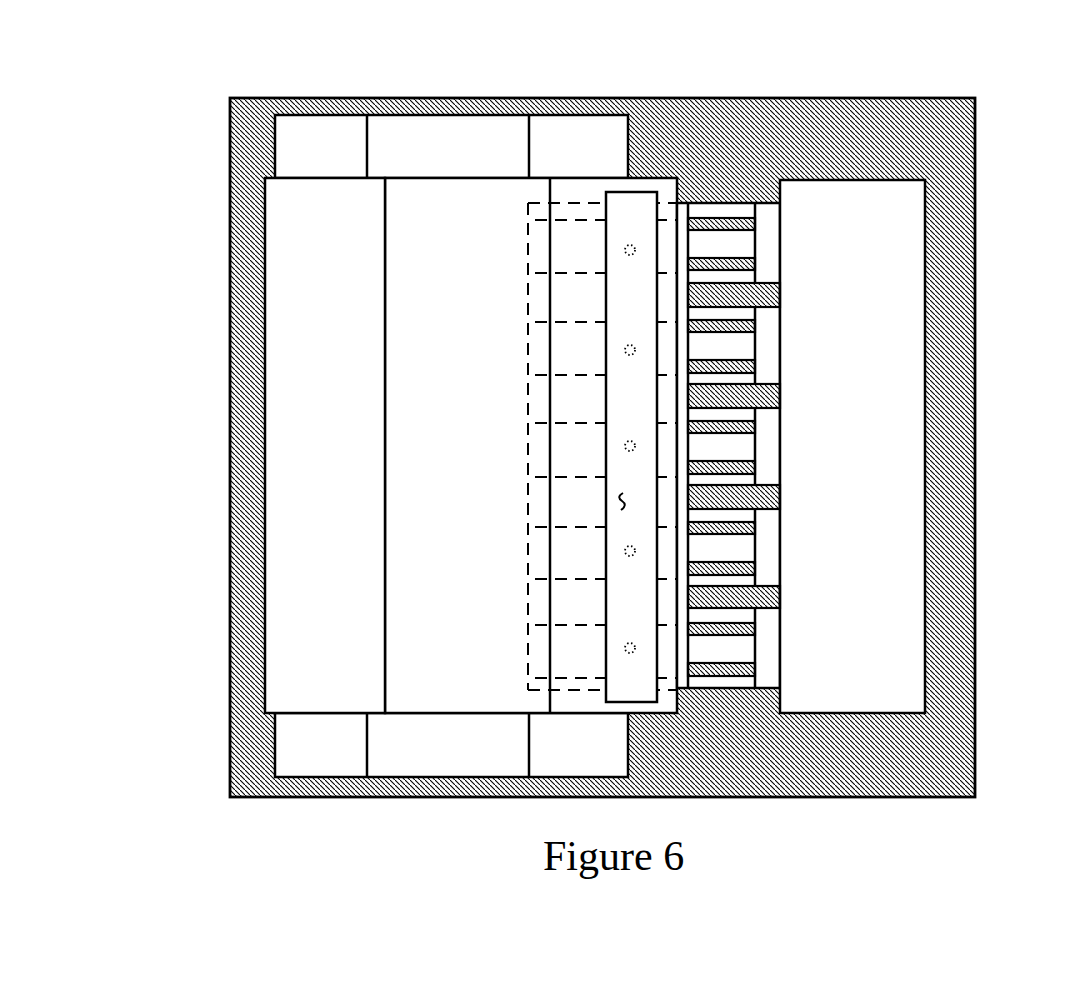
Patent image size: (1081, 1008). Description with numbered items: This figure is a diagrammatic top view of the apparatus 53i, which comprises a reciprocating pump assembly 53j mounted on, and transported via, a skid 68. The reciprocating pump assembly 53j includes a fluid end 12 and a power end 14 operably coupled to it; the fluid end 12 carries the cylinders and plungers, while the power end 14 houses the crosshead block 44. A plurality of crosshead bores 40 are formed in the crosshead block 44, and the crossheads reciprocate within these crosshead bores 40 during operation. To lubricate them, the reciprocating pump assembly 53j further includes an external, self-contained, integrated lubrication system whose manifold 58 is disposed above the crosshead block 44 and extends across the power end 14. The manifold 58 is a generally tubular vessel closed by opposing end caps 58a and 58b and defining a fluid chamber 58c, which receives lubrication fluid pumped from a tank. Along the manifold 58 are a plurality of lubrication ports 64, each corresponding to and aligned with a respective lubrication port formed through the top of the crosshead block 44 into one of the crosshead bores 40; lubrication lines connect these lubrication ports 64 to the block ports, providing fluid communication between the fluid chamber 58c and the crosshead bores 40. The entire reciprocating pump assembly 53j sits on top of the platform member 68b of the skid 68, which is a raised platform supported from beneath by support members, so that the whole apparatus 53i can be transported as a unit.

The fluid end 12 is at (806, 446).
The power end 14 is at (325, 445).
The crosshead bores 40 is at (540, 222).
The crosshead block 44 is at (528, 692).
The apparatus 53i is at (148, 125).
The reciprocating pump assembly 53j is at (492, 92).
The manifold 58 is at (606, 293).
The end cap 58a is at (617, 702).
The end cap 58b is at (630, 192).
The fluid chamber 58c is at (618, 503).
The lubrication ports 64 is at (624, 251).
The skid 68 is at (978, 137).
The platform member 68b is at (866, 120).